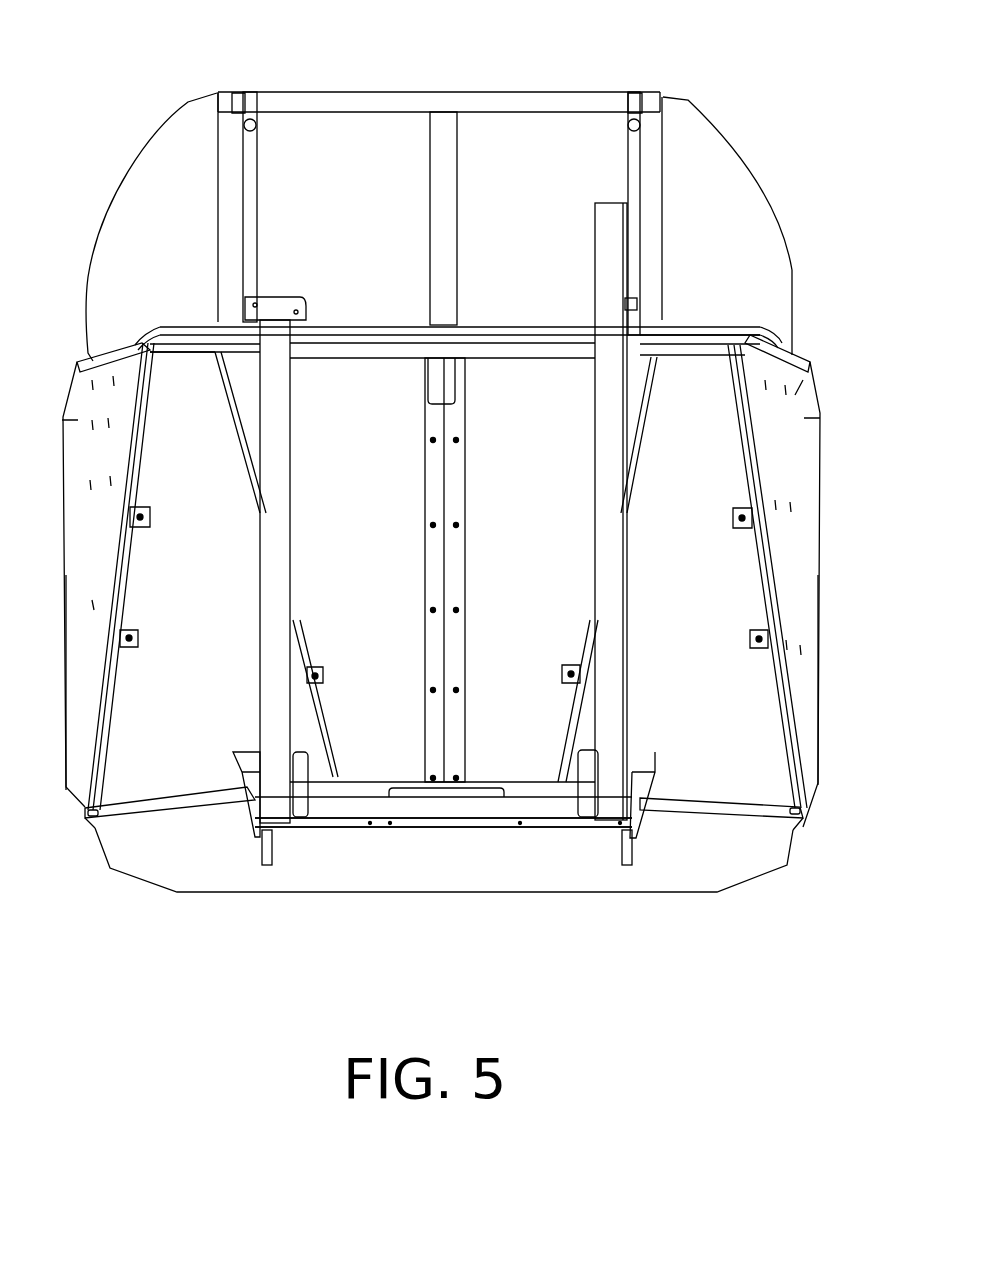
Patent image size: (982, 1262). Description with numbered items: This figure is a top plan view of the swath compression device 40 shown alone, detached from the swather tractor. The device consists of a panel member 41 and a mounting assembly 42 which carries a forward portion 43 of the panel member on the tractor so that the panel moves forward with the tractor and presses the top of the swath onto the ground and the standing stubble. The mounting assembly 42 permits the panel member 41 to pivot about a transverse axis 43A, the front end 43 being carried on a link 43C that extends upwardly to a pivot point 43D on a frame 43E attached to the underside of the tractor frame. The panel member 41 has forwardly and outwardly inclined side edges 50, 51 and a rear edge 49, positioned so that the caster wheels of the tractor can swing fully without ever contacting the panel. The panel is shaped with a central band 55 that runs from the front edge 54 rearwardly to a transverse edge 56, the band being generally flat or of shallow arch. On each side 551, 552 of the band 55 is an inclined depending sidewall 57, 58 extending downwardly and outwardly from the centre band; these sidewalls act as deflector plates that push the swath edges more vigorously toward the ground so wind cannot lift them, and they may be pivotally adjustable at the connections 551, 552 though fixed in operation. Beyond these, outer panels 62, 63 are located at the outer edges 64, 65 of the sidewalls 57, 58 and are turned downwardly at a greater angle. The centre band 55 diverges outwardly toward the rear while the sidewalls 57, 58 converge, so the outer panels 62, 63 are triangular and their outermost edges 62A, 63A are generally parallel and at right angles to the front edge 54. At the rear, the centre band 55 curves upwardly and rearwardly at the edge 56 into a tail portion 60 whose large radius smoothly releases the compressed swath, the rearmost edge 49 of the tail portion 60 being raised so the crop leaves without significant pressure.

The swath compression device 40 is at (728, 205).
The panel member 41 is at (745, 255).
The mounting assembly 42 is at (592, 850).
The forward portion 43 is at (470, 877).
The transverse axis 43A is at (395, 827).
The link 43C is at (273, 843).
The pivot point 43D is at (640, 820).
The frame 43E is at (278, 527).
The rear edge 49 is at (494, 92).
The side edge 50 is at (135, 160).
The side edge 51 is at (732, 147).
The front edge 54 is at (545, 895).
The central band 55 is at (400, 645).
The side of the band 551 is at (306, 620).
The side of the band 552 is at (590, 620).
The transverse edge 56 is at (490, 330).
The inclined depending sidewall 57 is at (208, 660).
The inclined depending sidewall 58 is at (707, 668).
The tail portion 60 is at (384, 248).
The outer panel 62 is at (106, 485).
The outermost edge 62A is at (85, 600).
The outer panel 63 is at (800, 468).
The outermost edge 63A is at (815, 580).
The outer edge 64 is at (138, 476).
The outer edge 65 is at (748, 470).